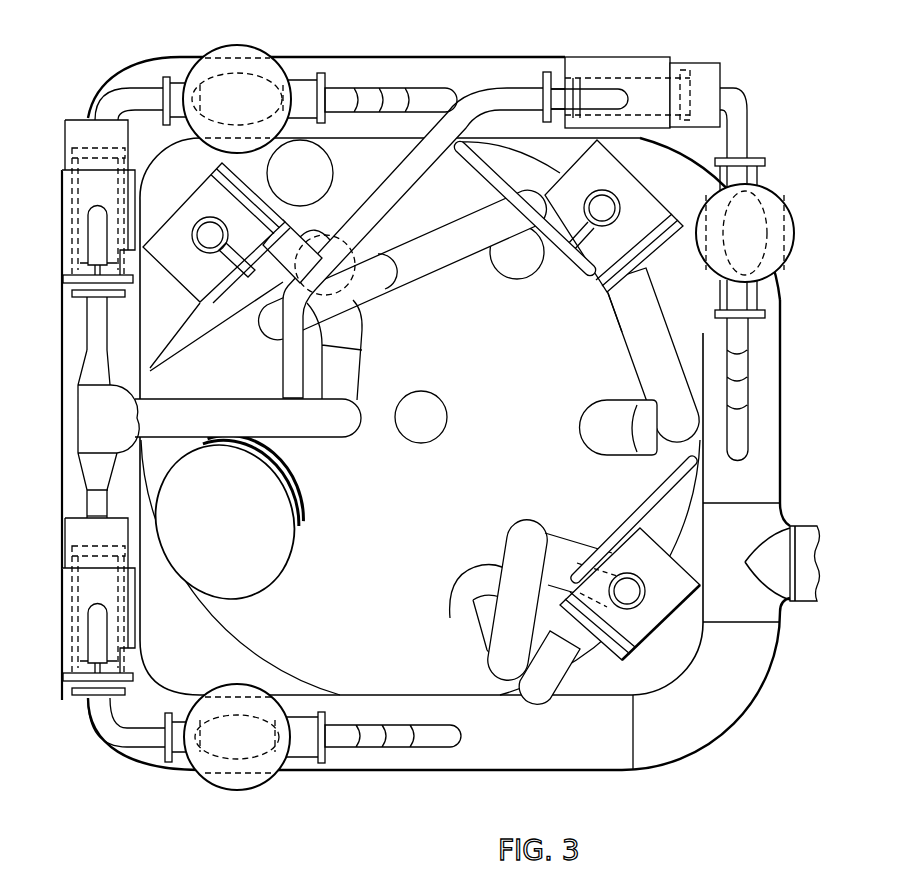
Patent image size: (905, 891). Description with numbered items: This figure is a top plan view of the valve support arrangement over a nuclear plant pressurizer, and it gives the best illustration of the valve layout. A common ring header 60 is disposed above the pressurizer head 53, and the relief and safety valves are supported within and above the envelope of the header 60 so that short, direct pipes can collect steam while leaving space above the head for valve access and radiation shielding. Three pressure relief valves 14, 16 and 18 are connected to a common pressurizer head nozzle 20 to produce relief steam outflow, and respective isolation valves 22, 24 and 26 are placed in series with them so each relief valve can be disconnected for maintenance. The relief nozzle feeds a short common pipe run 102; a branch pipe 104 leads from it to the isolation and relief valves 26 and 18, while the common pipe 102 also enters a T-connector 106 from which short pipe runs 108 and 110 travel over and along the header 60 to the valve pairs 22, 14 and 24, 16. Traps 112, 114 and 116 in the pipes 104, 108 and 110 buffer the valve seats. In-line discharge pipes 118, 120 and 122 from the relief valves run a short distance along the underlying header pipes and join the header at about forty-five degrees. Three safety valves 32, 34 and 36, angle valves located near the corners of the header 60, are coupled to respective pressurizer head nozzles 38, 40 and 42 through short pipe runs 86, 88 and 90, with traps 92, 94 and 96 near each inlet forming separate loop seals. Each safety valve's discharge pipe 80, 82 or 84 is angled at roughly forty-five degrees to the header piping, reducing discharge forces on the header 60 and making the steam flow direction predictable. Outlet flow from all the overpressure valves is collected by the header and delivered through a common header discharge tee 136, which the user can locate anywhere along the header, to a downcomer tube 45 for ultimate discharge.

The pressure relief valve 14 is at (237, 783).
The pressure relief valve 16 is at (258, 55).
The pressure relief valve 18 is at (785, 207).
The common pressurizer head nozzle 20 is at (312, 237).
The isolation valve 22 is at (62, 595).
The isolation valve 24 is at (63, 120).
The isolation valve 26 is at (648, 60).
The safety valve 32 is at (193, 197).
The safety valve 34 is at (633, 180).
The safety valve 36 is at (643, 627).
The pressurizer head nozzle 38 is at (515, 263).
The pressurizer head nozzle 40 is at (587, 442).
The pressurizer head nozzle 42 is at (470, 577).
The downcomer tube 45 is at (800, 603).
The pressurizer head 53 is at (412, 683).
The common ring header 60 is at (770, 427).
The discharge pipe 80 is at (310, 152).
The discharge pipe 82 is at (617, 327).
The discharge pipe 84 is at (520, 688).
The pipe 86 is at (433, 270).
The pipe 88 is at (640, 356).
The pipe 90 is at (522, 543).
The trap 92 is at (350, 380).
The trap 94 is at (605, 283).
The trap 96 is at (583, 553).
The common pipe run 102 is at (367, 335).
The branch pipe 104 is at (407, 190).
The T-connector 106 is at (98, 420).
The pipe run 108 is at (93, 498).
The pipe run 110 is at (127, 380).
The trap 112 is at (528, 88).
The trap 114 is at (92, 518).
The trap 116 is at (90, 313).
The in-line discharge pipe 118 is at (375, 740).
The in-line discharge pipe 120 is at (377, 88).
The in-line discharge pipe 122 is at (742, 362).
The common header discharge tee 136 is at (787, 513).